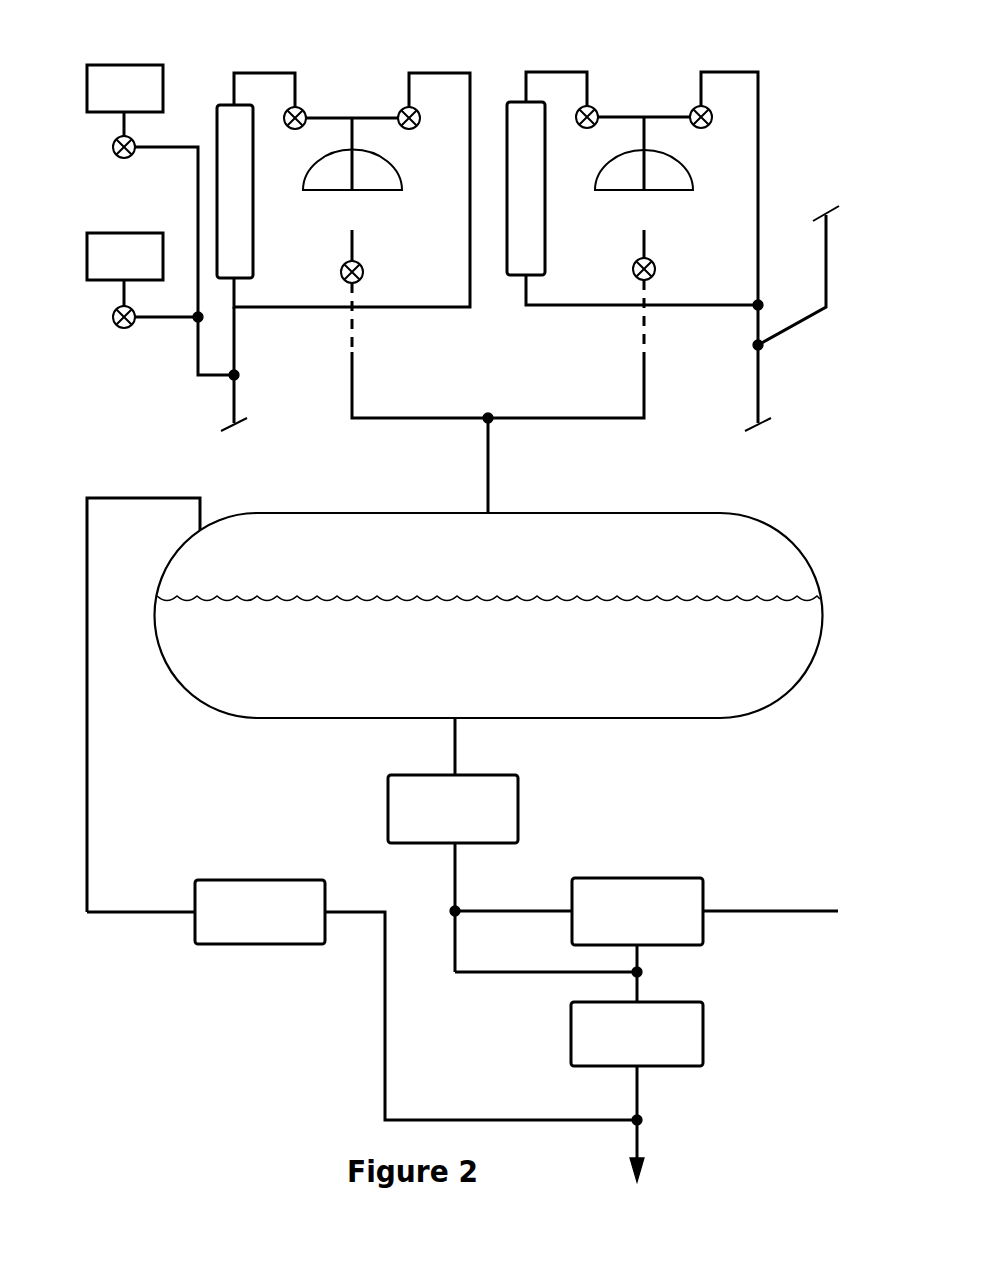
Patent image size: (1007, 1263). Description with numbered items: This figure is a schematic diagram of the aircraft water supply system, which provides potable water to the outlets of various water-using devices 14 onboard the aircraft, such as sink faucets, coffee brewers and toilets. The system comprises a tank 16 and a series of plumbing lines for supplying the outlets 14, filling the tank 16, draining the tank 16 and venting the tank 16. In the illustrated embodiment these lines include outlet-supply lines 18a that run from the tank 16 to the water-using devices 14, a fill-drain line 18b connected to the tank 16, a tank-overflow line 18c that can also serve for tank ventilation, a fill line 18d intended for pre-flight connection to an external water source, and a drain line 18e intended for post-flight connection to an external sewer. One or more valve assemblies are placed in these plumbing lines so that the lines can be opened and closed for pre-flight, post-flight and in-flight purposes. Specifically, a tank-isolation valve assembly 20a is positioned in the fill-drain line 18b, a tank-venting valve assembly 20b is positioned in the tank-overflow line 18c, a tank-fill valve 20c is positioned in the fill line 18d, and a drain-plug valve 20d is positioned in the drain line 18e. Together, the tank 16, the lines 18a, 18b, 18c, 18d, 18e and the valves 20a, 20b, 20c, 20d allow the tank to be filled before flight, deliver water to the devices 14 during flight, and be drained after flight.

The water-using devices 14 is at (87, 250).
The tank 16 is at (488, 600).
The outlet-supply lines 18a is at (488, 486).
The fill-drain line 18b is at (455, 742).
The tank-overflow line 18c is at (87, 800).
The fill line 18d is at (485, 911).
The drain line 18e is at (637, 987).
The tank-isolation valve assembly 20a is at (453, 809).
The tank-venting valve assembly 20b is at (416, 1000).
The tank-fill valve 20c is at (637, 911).
The drain-plug valve 20d is at (637, 1092).